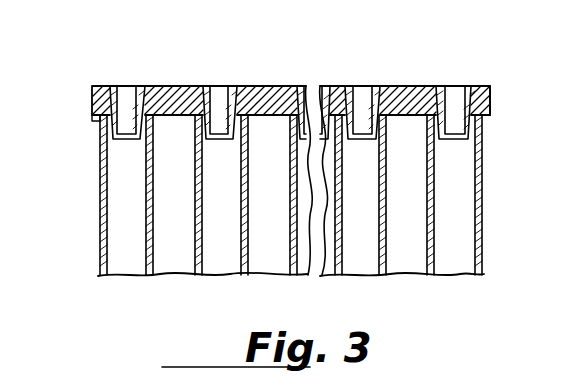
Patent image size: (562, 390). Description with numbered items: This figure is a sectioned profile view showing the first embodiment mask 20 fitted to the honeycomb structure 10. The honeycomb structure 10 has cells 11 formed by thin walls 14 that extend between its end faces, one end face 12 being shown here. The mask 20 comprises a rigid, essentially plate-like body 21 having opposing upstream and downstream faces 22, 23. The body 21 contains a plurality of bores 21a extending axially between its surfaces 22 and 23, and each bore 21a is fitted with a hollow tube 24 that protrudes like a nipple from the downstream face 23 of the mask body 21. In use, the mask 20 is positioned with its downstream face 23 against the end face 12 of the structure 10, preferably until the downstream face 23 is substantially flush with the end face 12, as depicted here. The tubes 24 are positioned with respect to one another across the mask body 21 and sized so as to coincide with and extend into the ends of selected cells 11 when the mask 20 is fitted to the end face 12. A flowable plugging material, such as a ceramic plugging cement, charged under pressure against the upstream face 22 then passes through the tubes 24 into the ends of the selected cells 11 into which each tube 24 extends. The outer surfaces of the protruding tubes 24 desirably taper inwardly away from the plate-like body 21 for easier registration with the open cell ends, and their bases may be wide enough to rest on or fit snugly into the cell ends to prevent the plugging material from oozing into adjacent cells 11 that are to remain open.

The honeycomb structure 10 is at (100, 201).
The cells 11 is at (218, 242).
The end face 12 is at (92, 111).
The thin walls 14 is at (343, 250).
The mask 20 is at (92, 97).
The plate-like body 21 is at (490, 100).
The bores 21a is at (187, 88).
The upstream face 22 is at (478, 88).
The downstream face 23 is at (492, 114).
The hollow tube 24 is at (236, 88).